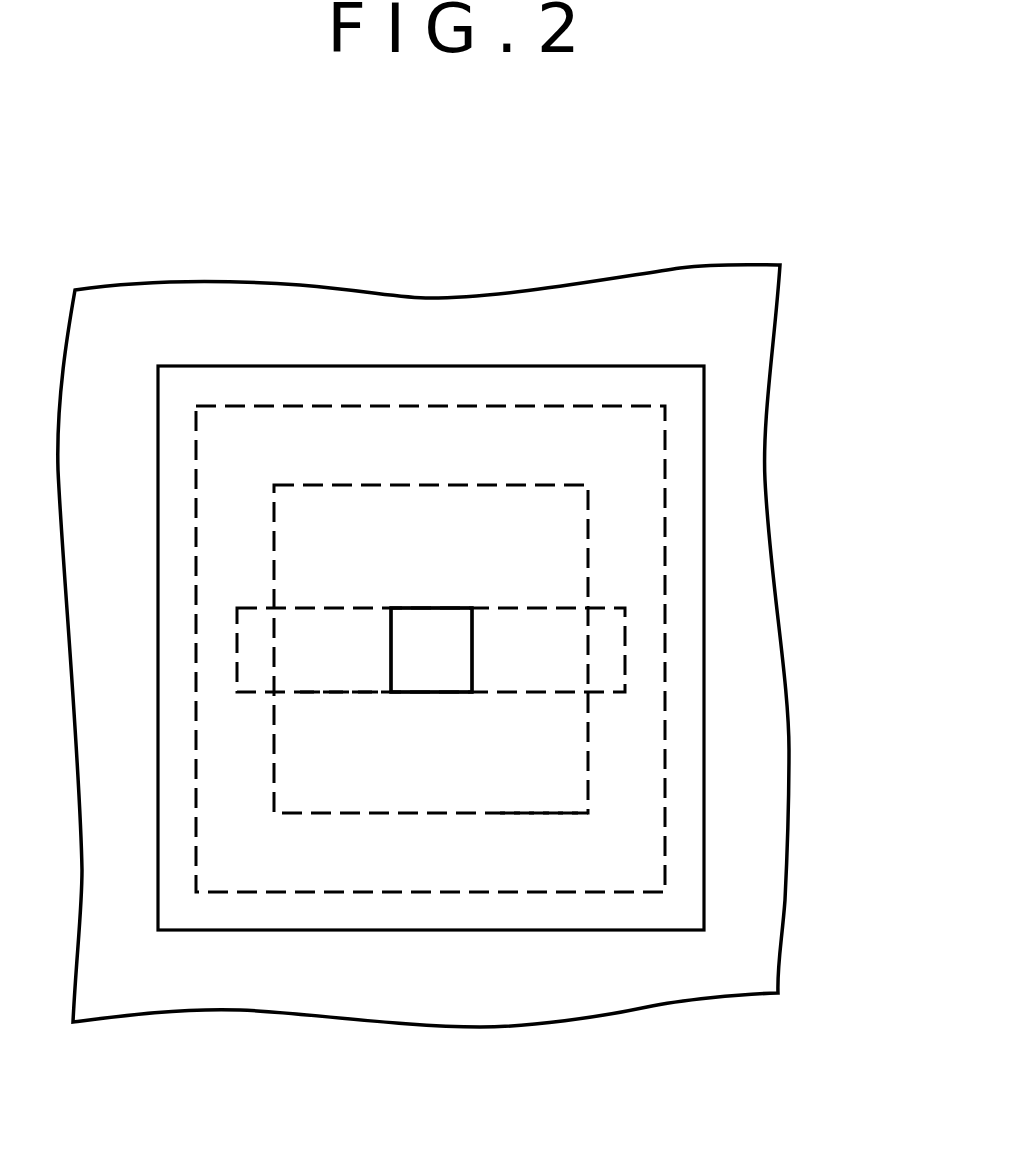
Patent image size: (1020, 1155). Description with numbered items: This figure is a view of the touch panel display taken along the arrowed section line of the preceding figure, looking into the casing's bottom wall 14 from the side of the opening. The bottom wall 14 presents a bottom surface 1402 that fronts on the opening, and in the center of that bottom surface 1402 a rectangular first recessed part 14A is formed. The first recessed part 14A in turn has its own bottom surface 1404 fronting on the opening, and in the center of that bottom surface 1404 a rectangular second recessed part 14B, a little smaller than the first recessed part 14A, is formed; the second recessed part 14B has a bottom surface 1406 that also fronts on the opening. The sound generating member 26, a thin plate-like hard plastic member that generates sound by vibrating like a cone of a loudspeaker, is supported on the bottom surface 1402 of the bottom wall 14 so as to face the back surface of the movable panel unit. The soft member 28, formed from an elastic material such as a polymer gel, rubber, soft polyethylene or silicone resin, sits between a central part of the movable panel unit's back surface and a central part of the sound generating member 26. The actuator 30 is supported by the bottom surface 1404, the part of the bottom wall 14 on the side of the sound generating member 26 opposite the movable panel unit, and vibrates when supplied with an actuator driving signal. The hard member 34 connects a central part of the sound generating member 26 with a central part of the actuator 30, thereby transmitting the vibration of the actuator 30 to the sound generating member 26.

The bottom wall 14 is at (423, 588).
The bottom surface 1402 is at (673, 320).
The sound generating member 26 is at (682, 418).
The first recessed part 14A is at (652, 503).
The second recessed part 14B is at (574, 760).
The bottom surface 1404 is at (620, 582).
The soft member 28 is at (452, 630).
The hard member 34 is at (408, 648).
The actuator 30 is at (327, 700).
The bottom surface 1406 is at (537, 782).